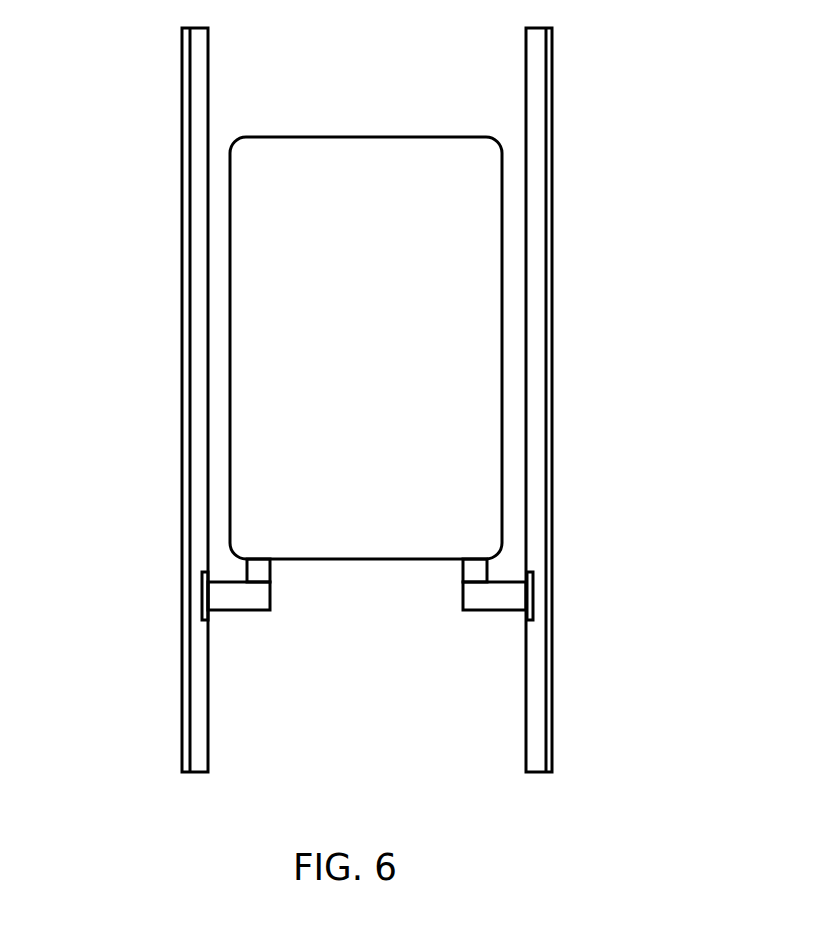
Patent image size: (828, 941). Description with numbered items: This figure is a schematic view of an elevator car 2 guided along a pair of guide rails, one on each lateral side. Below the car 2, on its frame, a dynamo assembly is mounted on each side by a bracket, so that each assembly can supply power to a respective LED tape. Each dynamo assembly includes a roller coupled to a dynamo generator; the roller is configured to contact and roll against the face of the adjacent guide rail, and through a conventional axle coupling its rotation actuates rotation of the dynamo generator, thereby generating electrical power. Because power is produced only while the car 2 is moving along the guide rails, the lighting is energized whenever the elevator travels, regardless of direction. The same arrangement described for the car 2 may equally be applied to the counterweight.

The elevator car 2 is at (377, 137).